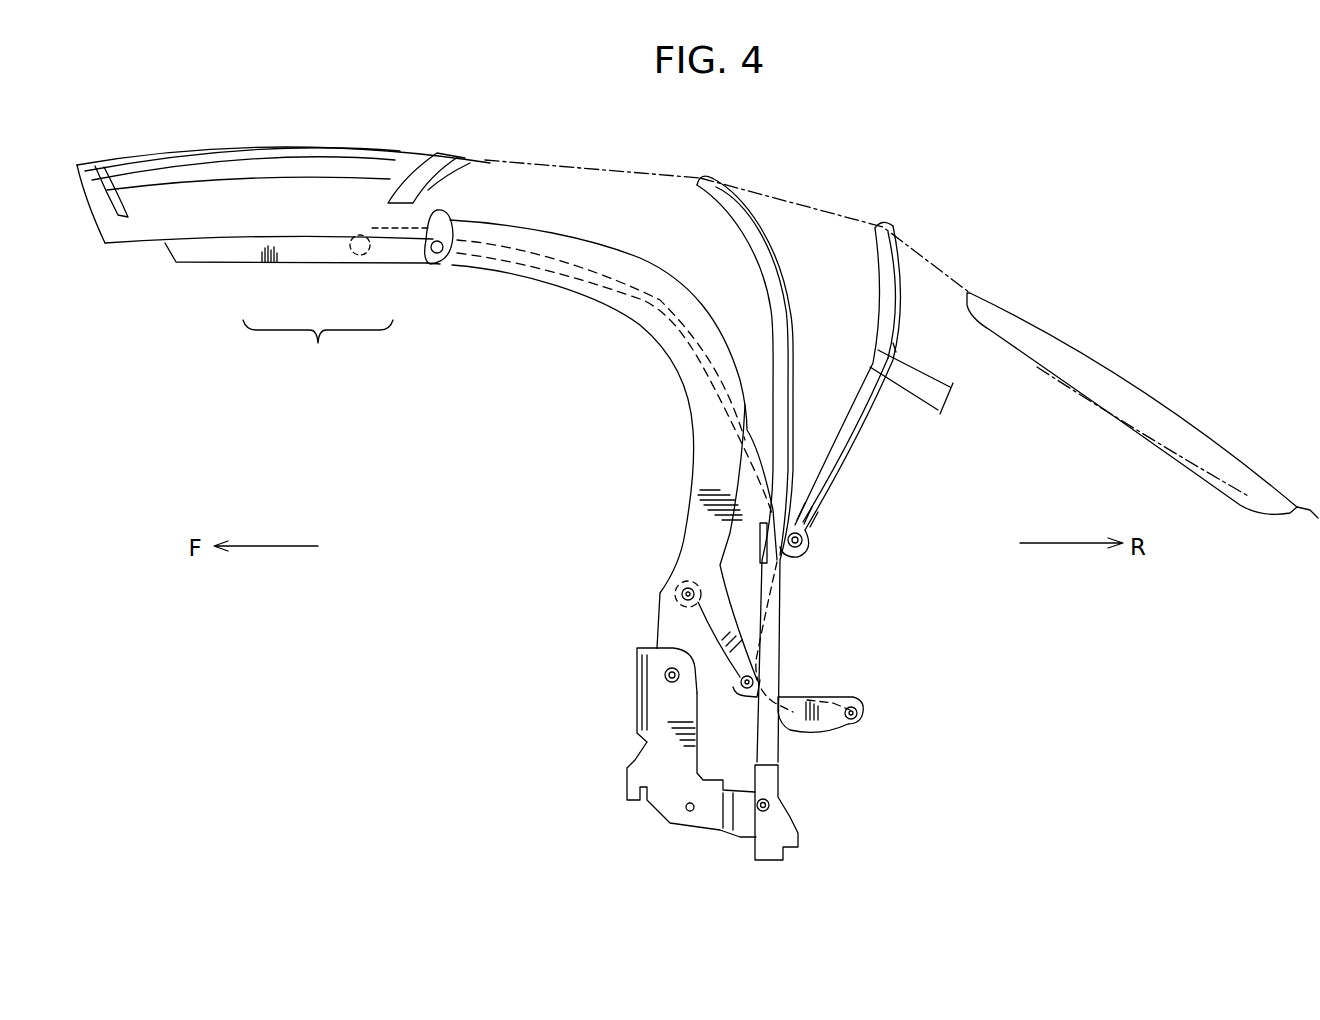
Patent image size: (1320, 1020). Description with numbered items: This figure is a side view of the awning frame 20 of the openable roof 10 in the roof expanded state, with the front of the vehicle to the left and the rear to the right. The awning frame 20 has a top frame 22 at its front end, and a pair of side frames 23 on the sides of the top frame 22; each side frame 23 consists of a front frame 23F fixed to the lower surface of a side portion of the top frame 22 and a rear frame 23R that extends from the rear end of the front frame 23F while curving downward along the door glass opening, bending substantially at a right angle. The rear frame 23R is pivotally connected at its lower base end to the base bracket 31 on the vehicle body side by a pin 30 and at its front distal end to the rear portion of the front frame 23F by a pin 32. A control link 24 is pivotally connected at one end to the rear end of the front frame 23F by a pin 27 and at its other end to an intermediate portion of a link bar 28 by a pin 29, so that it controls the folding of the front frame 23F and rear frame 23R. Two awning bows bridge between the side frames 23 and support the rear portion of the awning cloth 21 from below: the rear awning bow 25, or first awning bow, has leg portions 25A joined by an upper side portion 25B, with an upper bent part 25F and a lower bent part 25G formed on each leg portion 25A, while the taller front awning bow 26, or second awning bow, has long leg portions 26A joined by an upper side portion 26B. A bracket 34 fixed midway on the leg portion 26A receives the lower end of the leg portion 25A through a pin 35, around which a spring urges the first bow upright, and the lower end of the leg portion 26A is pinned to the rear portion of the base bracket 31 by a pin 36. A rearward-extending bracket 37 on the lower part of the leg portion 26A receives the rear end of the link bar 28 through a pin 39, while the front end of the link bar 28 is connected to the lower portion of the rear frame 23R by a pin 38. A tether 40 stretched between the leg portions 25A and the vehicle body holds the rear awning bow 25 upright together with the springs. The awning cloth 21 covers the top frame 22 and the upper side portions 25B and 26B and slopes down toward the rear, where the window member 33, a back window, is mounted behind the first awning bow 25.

The openable roof 10 is at (590, 146).
The awning frame 20 is at (298, 131).
The awning cloth 21 is at (833, 203).
The top frame 22 is at (177, 156).
The side frame 23 is at (318, 346).
The front frame 23F is at (294, 250).
The rear frame 23R is at (452, 265).
The control link 24 is at (692, 333).
The rear awning bow 25 is at (866, 447).
The leg portion 25A is at (873, 377).
The upper side portion 25B is at (880, 223).
The upper bent part 25F is at (897, 348).
The lower bent part 25G is at (832, 443).
The front awning bow 26 is at (794, 313).
The leg portion 26A is at (777, 437).
The upper side portion 26B is at (700, 175).
The pin 27 is at (447, 240).
The link bar 28 is at (822, 735).
The pin 29 is at (746, 692).
The pin 30 is at (665, 677).
The base bracket 31 is at (650, 765).
The pin 32 is at (362, 233).
The window member 33 is at (1127, 387).
The bracket 34 is at (760, 548).
The pin 35 is at (804, 543).
The pin 36 is at (760, 815).
The bracket 37 is at (800, 693).
The pin 38 is at (680, 598).
The pin 39 is at (862, 720).
The tether 40 is at (920, 368).